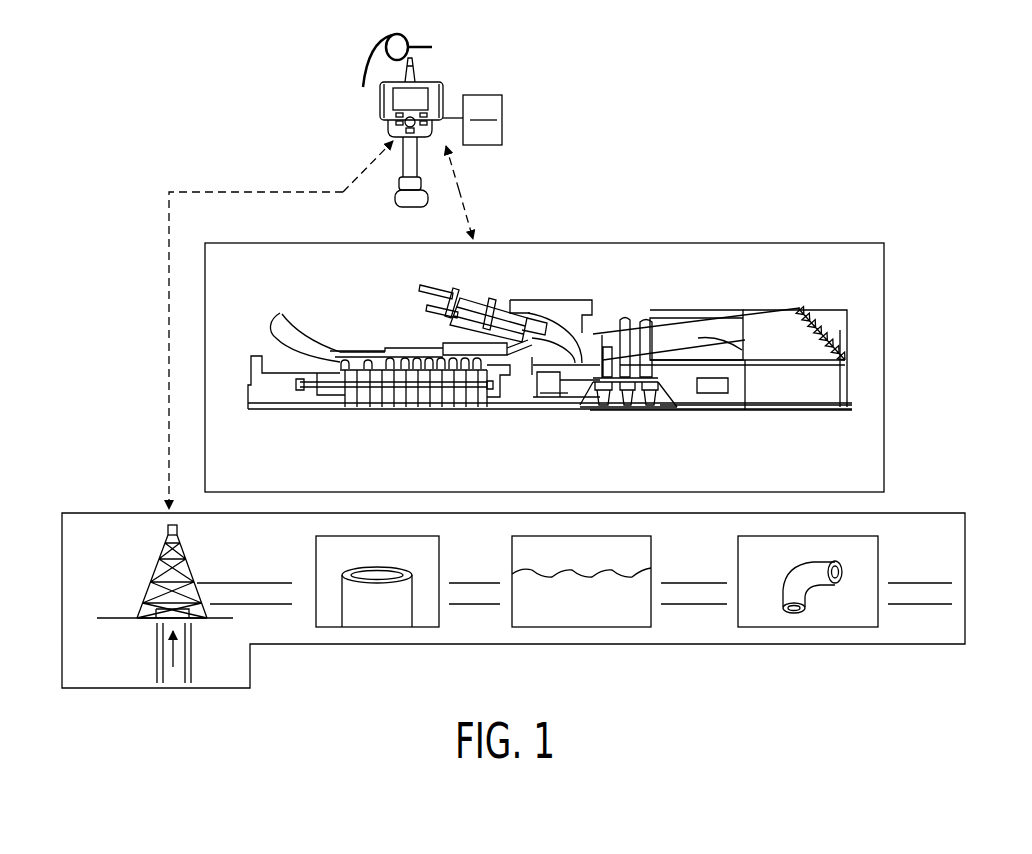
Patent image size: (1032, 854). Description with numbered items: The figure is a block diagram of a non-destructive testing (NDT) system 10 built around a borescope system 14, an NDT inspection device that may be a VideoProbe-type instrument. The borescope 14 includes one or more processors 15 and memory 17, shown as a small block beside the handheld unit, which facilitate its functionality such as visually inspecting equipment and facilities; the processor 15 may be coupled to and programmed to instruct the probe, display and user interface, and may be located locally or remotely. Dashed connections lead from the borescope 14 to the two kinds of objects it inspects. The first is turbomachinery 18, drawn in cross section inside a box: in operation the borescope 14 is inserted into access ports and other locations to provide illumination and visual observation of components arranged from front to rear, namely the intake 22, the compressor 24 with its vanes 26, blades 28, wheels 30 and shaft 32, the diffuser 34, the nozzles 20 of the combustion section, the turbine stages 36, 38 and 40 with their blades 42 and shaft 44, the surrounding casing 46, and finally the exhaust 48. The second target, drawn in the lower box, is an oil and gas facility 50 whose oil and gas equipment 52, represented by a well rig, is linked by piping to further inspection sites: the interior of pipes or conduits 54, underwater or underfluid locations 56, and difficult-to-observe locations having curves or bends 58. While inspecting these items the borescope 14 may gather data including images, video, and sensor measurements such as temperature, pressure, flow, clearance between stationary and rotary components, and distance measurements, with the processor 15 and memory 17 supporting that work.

The non-destructive testing (NDT) system 10 is at (880, 45).
The borescope system 14 is at (397, 205).
The processor 15 is at (503, 112).
The memory 17 is at (503, 133).
The turbomachinery 18 is at (837, 241).
The nozzles 20 is at (480, 300).
The intake 22 is at (278, 359).
The compressor 24 is at (435, 336).
The vanes 26 is at (364, 357).
The blades 28 is at (341, 364).
The wheels 30 is at (345, 395).
The shaft 32 is at (352, 386).
The diffuser 34 is at (531, 370).
The stage 36 is at (615, 410).
The stage 38 is at (623, 414).
The stage 40 is at (665, 410).
The blades 42 is at (606, 346).
The shaft 44 is at (568, 404).
The casing 46 is at (630, 340).
The exhaust 48 is at (846, 296).
The oil and gas facility 50 is at (966, 577).
The oil and gas equipment 52 is at (130, 576).
The pipes or conduits 54 is at (440, 563).
The underwater (or underfluid) locations 56 is at (652, 563).
The locations having curves or bends 58 is at (879, 560).